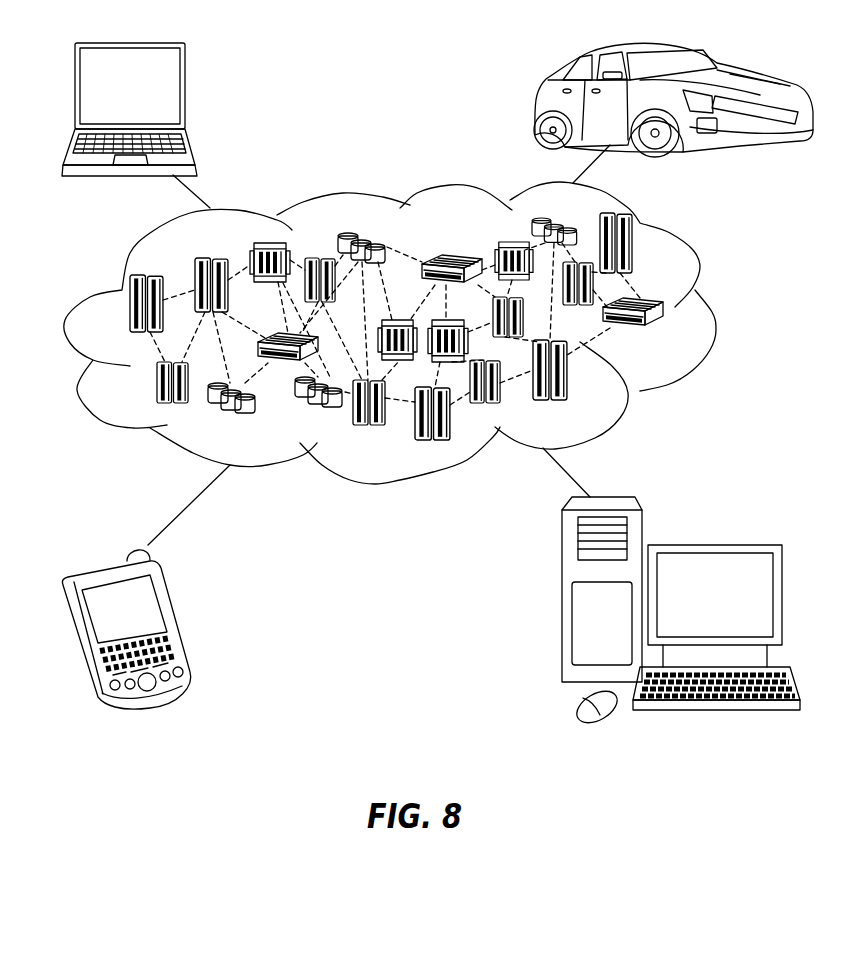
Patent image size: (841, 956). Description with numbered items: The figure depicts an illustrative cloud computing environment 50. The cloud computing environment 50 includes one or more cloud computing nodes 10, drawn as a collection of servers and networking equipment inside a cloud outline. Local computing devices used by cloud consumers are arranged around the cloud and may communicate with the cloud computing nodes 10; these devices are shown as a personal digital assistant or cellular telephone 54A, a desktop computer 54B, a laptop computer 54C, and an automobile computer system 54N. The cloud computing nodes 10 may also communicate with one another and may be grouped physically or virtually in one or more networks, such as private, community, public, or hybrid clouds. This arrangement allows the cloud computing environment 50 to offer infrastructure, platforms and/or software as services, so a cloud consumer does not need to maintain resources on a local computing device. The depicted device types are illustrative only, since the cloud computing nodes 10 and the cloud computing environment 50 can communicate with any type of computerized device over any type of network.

The cloud computing environment 50 is at (712, 312).
The cloud computing node 10 is at (671, 342).
The personal digital assistant or cellular telephone 54A is at (177, 622).
The desktop computer 54B is at (713, 543).
The laptop computer 54C is at (186, 90).
The automobile computer system 54N is at (538, 103).